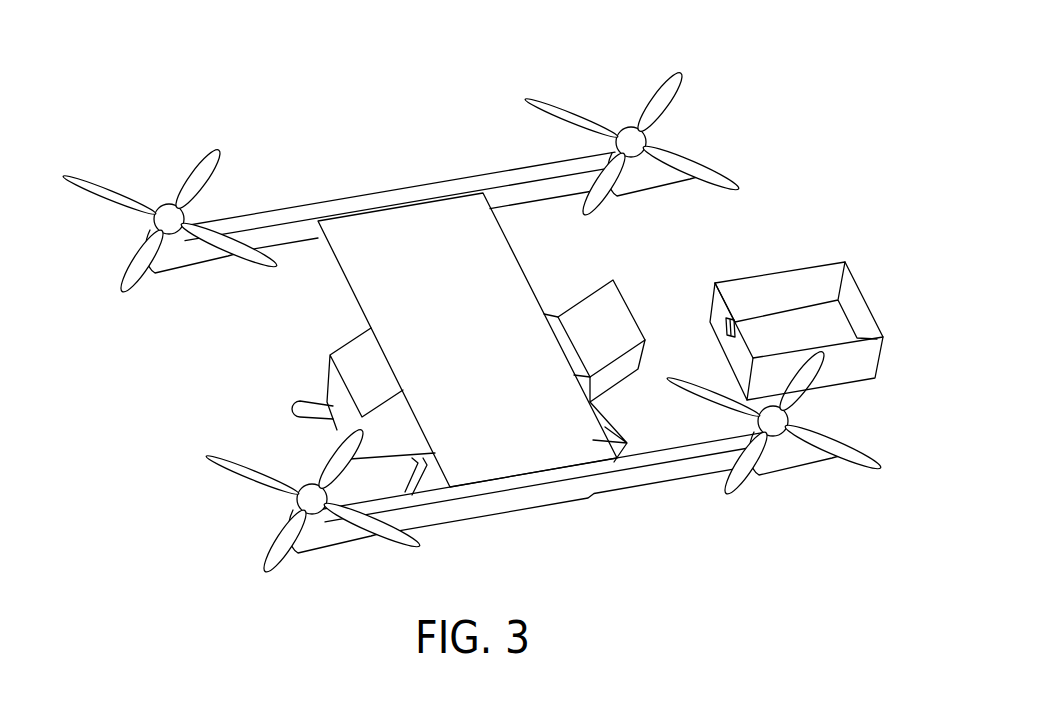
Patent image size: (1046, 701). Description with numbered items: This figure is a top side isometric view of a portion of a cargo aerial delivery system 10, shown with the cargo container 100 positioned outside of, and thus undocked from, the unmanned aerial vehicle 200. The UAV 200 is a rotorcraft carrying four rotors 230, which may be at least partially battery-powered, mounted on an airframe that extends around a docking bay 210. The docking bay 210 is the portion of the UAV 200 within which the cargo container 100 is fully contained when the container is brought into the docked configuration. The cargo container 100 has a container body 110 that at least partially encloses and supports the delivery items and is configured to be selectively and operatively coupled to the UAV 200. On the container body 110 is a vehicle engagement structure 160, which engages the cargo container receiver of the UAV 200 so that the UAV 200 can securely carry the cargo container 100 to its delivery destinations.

The cargo aerial delivery system 10 is at (315, 55).
The unmanned aerial vehicle 200 is at (390, 153).
The rotor 230 is at (682, 97).
The docking bay 210 is at (618, 398).
The cargo container 100 is at (862, 292).
The container body 110 is at (878, 323).
The vehicle engagement structure 160 is at (724, 321).